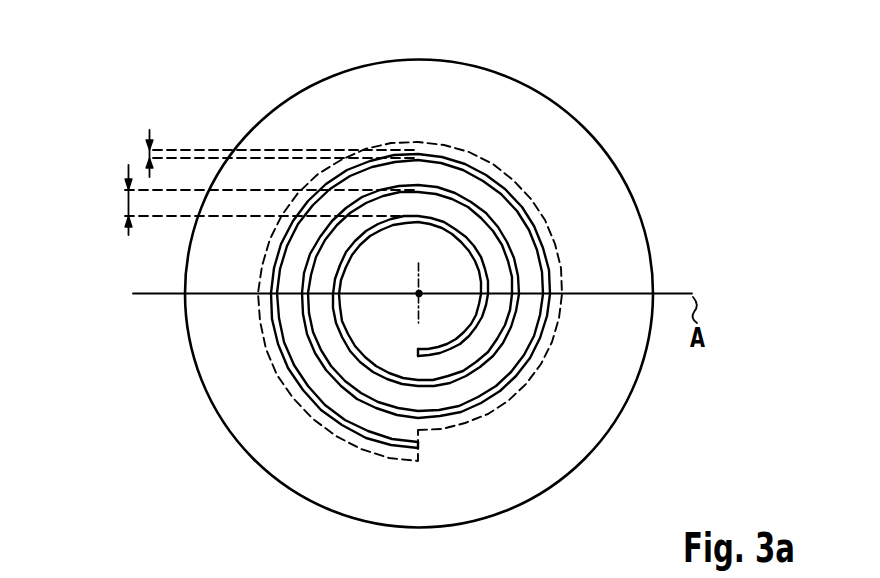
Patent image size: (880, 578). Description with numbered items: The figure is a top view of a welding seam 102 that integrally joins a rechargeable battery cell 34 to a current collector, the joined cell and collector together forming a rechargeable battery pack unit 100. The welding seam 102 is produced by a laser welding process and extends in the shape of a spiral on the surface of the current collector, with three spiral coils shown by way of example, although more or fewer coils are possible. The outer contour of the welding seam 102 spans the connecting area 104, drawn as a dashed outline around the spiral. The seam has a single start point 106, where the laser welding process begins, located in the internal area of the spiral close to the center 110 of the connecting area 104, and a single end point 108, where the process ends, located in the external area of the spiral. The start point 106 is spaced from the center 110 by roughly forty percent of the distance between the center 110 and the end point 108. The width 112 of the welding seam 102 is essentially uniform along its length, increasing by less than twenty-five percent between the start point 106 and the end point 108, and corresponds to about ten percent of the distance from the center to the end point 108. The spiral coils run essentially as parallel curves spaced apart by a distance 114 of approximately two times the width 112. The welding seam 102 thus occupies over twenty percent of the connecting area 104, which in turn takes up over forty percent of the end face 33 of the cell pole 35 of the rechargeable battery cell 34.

The rechargeable battery cell 34 is at (508, 72).
The electrical cell pole 35 is at (556, 129).
The end face 33 is at (605, 189).
The rechargeable battery pack unit 100 is at (653, 100).
The welding seam 102 is at (555, 272).
The connecting area 104 is at (502, 412).
The start point 106 is at (418, 352).
The end point 108 is at (420, 447).
The center 110 is at (419, 294).
The width 112 is at (147, 153).
The distance 114 is at (127, 200).